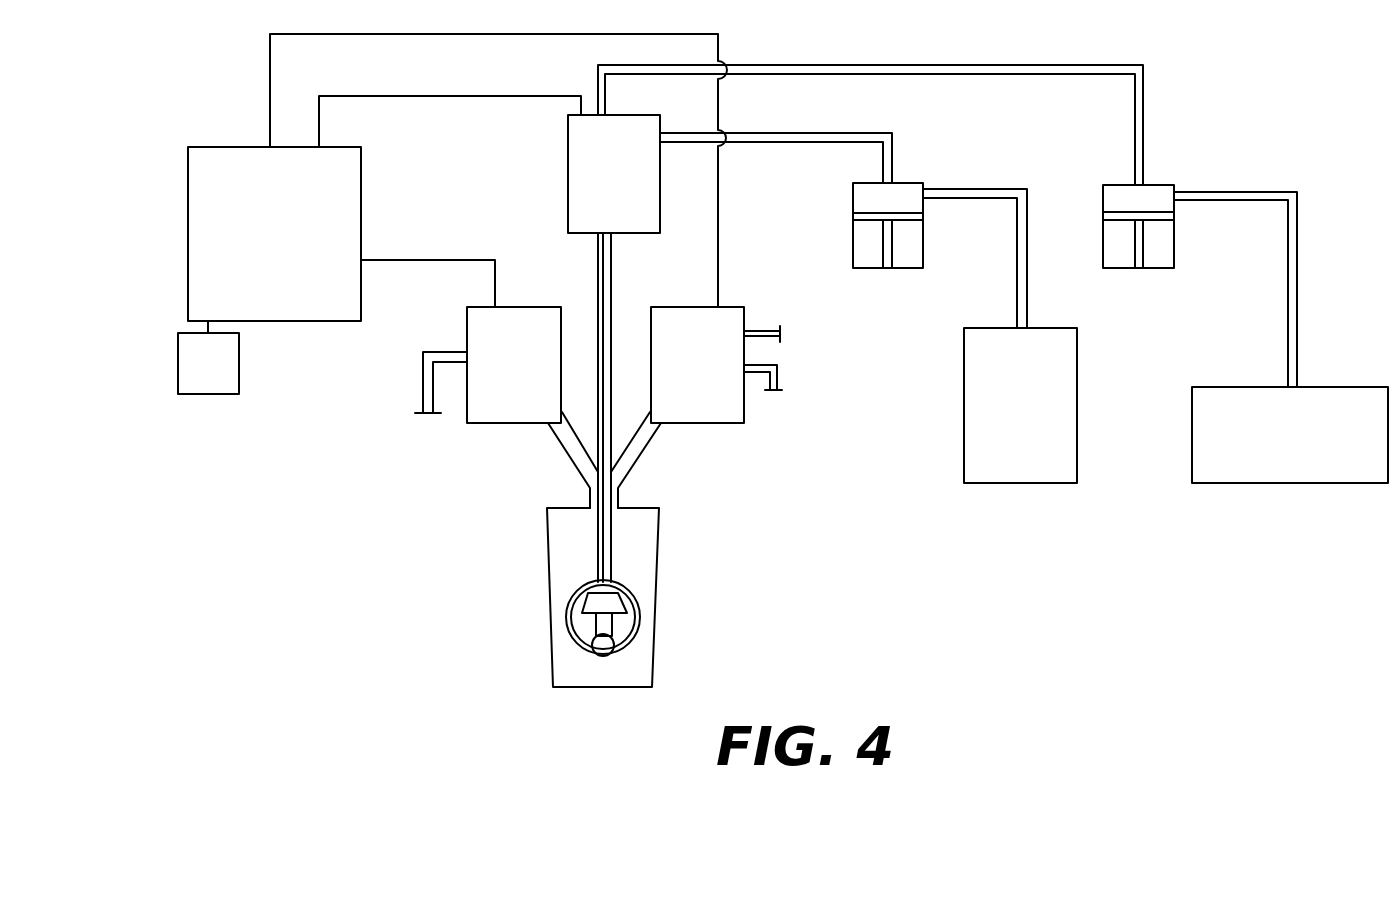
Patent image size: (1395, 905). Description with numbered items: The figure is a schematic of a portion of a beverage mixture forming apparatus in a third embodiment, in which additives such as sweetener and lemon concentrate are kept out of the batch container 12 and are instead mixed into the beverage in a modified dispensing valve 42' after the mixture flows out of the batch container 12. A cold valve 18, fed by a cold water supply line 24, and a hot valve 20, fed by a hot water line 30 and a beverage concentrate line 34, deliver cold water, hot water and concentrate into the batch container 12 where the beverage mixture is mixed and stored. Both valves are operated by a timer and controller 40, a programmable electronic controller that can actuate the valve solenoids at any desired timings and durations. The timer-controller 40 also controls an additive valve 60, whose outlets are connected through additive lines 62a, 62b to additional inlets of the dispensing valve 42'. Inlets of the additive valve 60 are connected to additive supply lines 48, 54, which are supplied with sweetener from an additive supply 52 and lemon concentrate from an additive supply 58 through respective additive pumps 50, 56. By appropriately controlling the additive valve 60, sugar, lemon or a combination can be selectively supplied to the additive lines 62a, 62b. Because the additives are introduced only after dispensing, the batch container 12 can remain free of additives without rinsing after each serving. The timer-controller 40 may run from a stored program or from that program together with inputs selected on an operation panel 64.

The batch container 12 is at (658, 563).
The cold valve 18 is at (492, 425).
The hot valve 20 is at (733, 425).
The cold water supply line 24 is at (422, 390).
The hot water line 30 is at (777, 378).
The beverage concentrate line 34 is at (770, 326).
The timer and controller 40 is at (362, 219).
The modified dispensing valve 42' is at (557, 618).
The additive supply line 48 is at (853, 144).
The additive pump 50 is at (923, 250).
The additive supply 52 is at (1077, 410).
The additive supply line 54 is at (983, 75).
The additive pump 56 is at (1174, 251).
The additive supply 58 is at (1260, 387).
The additive valve 60 is at (660, 210).
The additive line 62a is at (598, 533).
The additive line 62b is at (611, 537).
The operation panel 64 is at (225, 386).